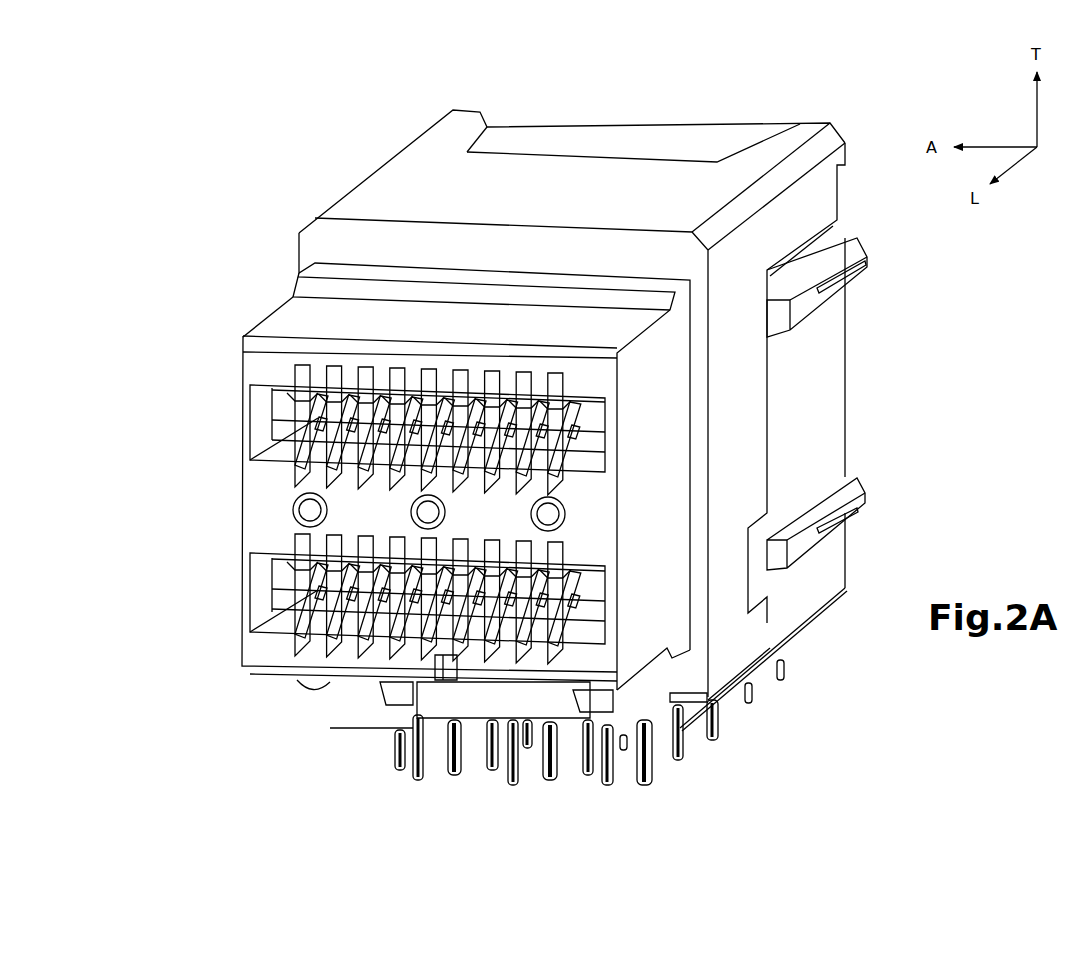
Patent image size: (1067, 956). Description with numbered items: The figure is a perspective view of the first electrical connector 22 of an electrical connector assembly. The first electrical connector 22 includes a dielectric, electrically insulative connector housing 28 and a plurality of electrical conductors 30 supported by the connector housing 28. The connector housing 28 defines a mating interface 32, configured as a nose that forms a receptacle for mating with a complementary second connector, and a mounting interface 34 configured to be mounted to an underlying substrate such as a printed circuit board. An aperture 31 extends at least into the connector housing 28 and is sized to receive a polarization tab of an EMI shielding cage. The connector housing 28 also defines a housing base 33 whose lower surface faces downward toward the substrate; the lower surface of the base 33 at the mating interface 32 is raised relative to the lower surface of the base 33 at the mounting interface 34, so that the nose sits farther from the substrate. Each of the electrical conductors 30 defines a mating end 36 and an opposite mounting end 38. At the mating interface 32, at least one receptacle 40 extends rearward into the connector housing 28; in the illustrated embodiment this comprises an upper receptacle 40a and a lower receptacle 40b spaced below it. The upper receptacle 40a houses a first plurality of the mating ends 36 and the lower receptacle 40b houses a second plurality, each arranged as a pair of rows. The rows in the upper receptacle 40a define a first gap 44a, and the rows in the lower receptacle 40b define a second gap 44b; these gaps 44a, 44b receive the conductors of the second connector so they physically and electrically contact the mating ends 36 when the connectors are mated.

The first electrical connector 22 is at (345, 115).
The connector housing 28 is at (405, 143).
The electrical conductors 30 is at (312, 422).
The aperture 31 is at (447, 690).
The mating interface 32 is at (272, 500).
The housing base 33 is at (355, 668).
The mounting interface 34 is at (775, 658).
The mating ends 36 is at (565, 590).
The mounting ends 38 is at (645, 762).
The receptacle 40 is at (272, 378).
The upper receptacle 40a is at (243, 442).
The lower receptacle 40b is at (248, 620).
The first gap 44a is at (292, 402).
The second gap 44b is at (287, 587).